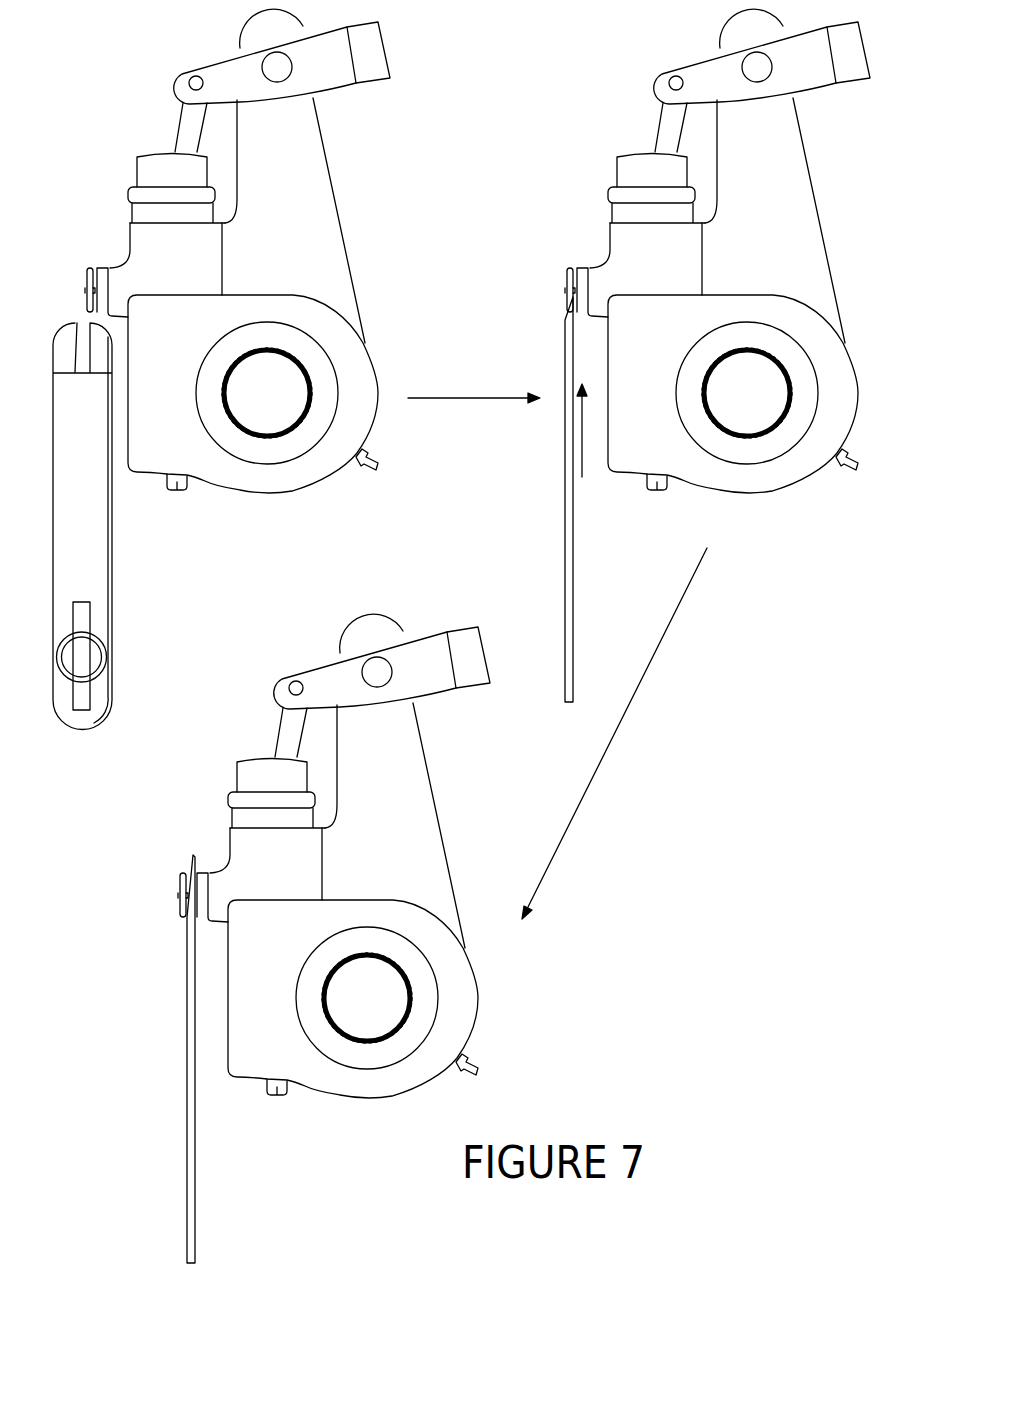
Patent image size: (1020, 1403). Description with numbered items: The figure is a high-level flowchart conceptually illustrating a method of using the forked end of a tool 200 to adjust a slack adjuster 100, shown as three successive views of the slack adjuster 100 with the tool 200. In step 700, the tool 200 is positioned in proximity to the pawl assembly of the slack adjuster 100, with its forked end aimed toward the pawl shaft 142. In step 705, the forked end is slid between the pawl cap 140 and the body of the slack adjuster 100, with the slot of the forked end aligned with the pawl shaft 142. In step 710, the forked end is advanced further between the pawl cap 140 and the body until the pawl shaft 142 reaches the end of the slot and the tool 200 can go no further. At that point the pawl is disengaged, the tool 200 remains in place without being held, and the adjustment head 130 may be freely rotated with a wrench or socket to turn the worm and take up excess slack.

The slack adjuster 100 is at (327, 158).
The adjustment head 130 is at (177, 490).
The pawl cap 140 is at (90, 268).
The pawl shaft 142 is at (98, 267).
The tool 200 is at (110, 533).
The step 700 is at (255, 547).
The step 705 is at (760, 569).
The step 710 is at (372, 1131).